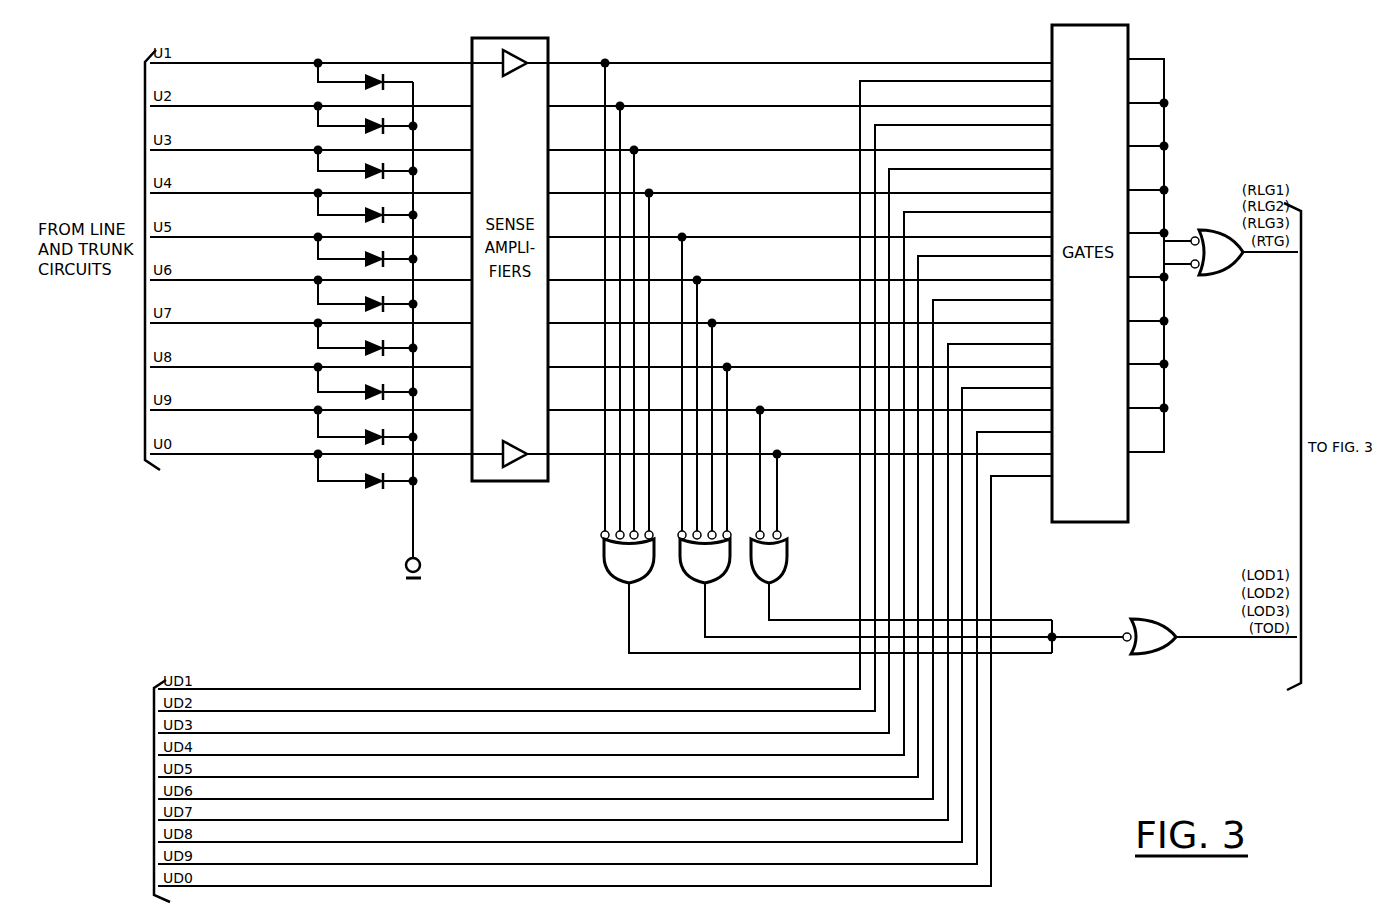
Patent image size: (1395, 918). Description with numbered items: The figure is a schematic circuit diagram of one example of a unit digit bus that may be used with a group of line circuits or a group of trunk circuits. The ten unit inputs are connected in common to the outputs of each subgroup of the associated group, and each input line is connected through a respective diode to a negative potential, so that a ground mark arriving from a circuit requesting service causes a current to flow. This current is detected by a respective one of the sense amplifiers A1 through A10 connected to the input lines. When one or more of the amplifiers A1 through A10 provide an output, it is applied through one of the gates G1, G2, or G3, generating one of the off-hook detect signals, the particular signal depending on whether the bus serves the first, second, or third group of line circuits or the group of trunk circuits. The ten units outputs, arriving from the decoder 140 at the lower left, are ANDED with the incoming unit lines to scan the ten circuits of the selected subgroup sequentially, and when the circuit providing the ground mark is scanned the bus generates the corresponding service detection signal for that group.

The sense amplifier A1 is at (509, 63).
The sense amplifier A10 is at (508, 436).
The gate G1 is at (608, 559).
The gate G2 is at (697, 578).
The gate G3 is at (788, 563).
The decoder 140 is at (106, 791).